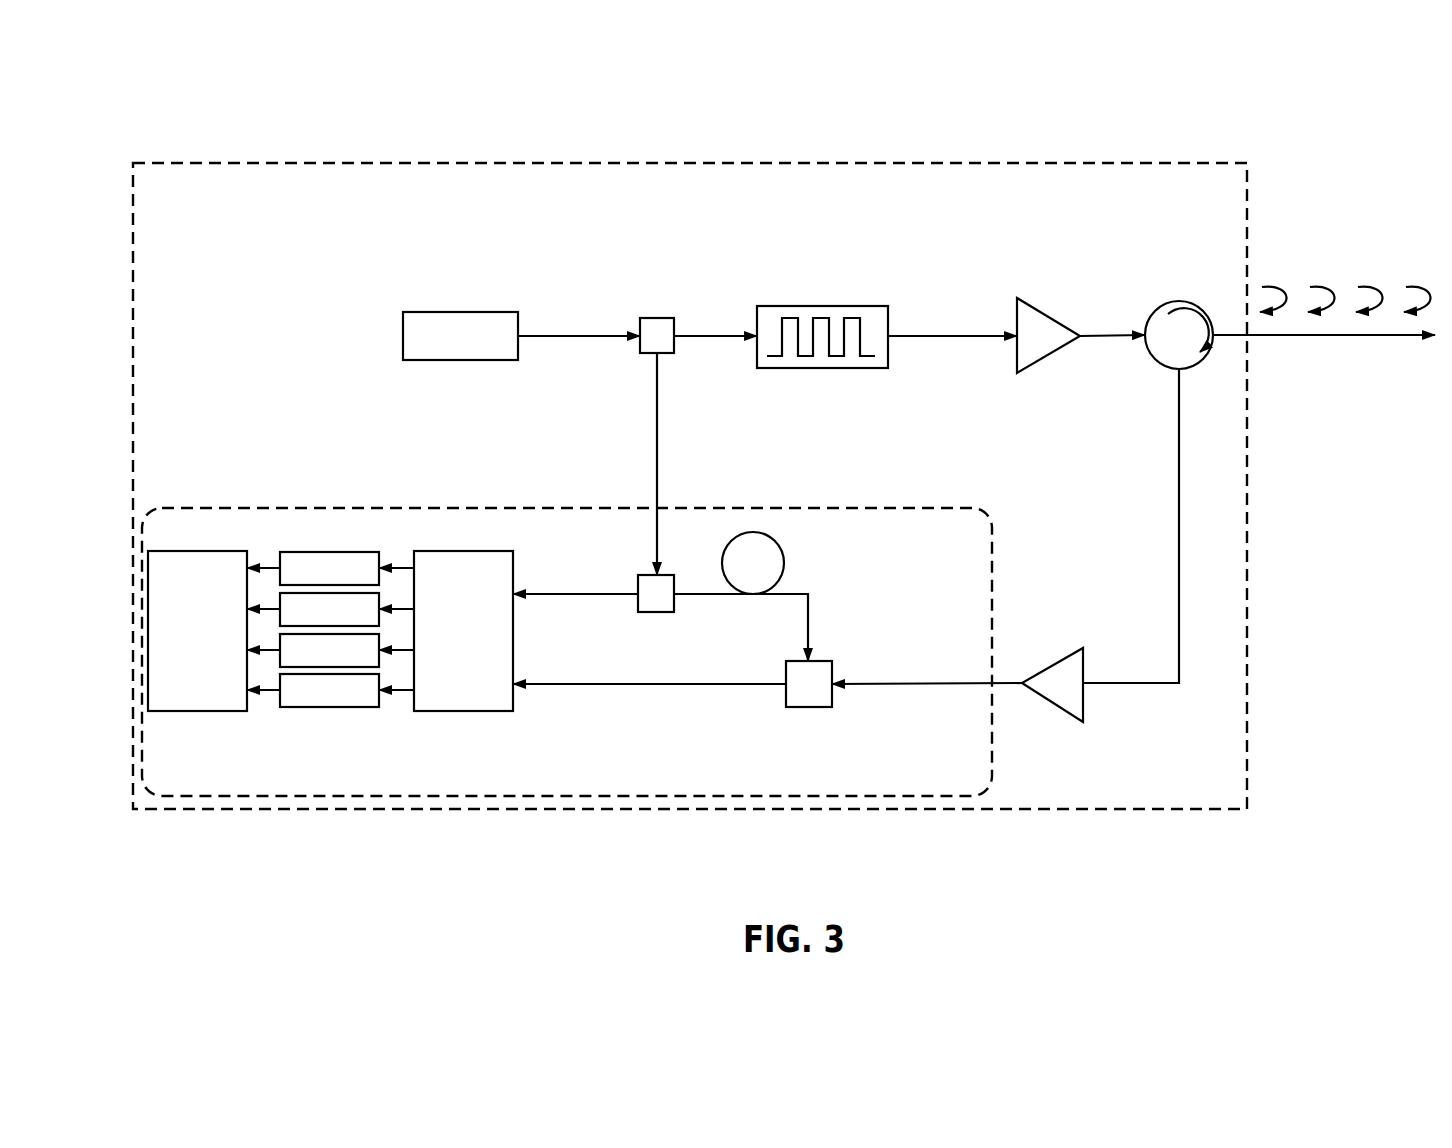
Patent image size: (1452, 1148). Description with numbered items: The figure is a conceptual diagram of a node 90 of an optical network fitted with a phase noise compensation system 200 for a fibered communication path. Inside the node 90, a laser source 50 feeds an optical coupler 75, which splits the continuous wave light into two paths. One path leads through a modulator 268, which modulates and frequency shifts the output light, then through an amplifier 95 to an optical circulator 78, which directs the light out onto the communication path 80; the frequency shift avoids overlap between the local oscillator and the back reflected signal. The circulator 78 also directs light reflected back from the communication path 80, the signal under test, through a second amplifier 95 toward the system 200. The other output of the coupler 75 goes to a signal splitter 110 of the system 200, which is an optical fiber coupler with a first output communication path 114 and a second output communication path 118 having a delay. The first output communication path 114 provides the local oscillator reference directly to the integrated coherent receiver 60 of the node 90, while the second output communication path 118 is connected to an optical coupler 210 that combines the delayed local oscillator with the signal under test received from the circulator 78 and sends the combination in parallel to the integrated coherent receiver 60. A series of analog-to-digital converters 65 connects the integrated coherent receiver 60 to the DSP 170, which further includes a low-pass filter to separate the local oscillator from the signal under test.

The node 90 is at (450, 162).
The laser source 50 is at (460, 336).
The optical coupler 75 is at (657, 318).
The modulator 268 is at (832, 378).
The amplifier 95 is at (1053, 352).
The optical circulator 78 is at (1183, 301).
The communication path 80 is at (1305, 337).
The phase noise compensation system 200 is at (992, 547).
The first output communication path 114 is at (575, 593).
The signal splitter 110 is at (655, 612).
The second output communication path 118 is at (814, 604).
The optical coupler 210 is at (808, 707).
The integrated coherent receiver 60 is at (463, 631).
The DSP 170 is at (197, 631).
The analog-to-digital converters 65 is at (330, 716).